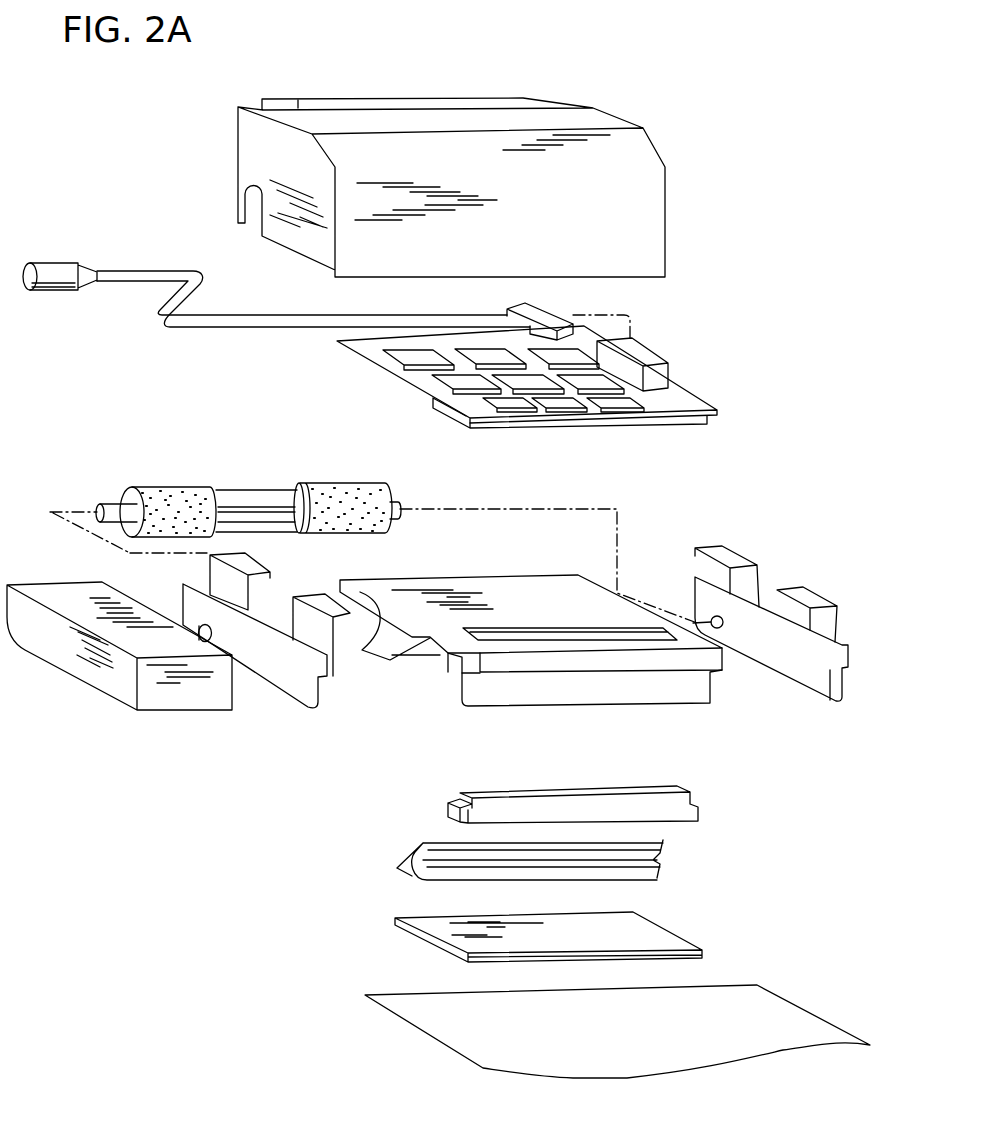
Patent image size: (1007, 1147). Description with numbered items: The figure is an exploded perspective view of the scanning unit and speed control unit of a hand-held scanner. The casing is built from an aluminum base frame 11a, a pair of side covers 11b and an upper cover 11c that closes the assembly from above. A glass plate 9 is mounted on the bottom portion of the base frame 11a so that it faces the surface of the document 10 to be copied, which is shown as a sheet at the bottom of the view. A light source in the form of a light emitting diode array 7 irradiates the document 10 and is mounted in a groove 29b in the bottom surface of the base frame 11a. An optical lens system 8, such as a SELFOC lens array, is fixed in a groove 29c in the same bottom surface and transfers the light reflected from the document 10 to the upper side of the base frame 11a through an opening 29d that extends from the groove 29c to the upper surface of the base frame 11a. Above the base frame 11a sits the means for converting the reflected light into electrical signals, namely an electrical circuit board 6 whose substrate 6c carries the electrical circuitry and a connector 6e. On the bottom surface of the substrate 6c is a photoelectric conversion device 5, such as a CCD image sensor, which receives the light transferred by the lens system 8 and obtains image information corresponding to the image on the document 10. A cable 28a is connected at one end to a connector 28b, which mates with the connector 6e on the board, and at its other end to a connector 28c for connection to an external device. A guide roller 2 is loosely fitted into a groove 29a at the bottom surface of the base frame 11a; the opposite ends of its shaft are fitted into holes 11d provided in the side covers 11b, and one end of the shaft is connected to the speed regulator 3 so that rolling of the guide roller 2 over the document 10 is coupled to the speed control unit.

The guide roller 2 is at (142, 487).
The speed regulator 3 is at (107, 697).
The photoelectric conversion device 5 is at (650, 423).
The electrical circuit board 6 is at (555, 387).
The substrate 6c is at (692, 395).
The connector 6e is at (650, 352).
The light emitting diode array 7 is at (665, 868).
The optical lens system 8 is at (702, 808).
The glass plate 9 is at (702, 943).
The document 10 is at (795, 1005).
The base frame 11a is at (672, 708).
The side covers 11b is at (293, 703).
The upper cover 11c is at (668, 187).
The holes 11d is at (197, 627).
The cable 28a is at (131, 270).
The connector 28b is at (533, 305).
The connector 28c is at (62, 292).
The groove 29a is at (507, 652).
The groove 29b is at (408, 658).
The groove 29c is at (470, 674).
The opening 29d is at (577, 640).